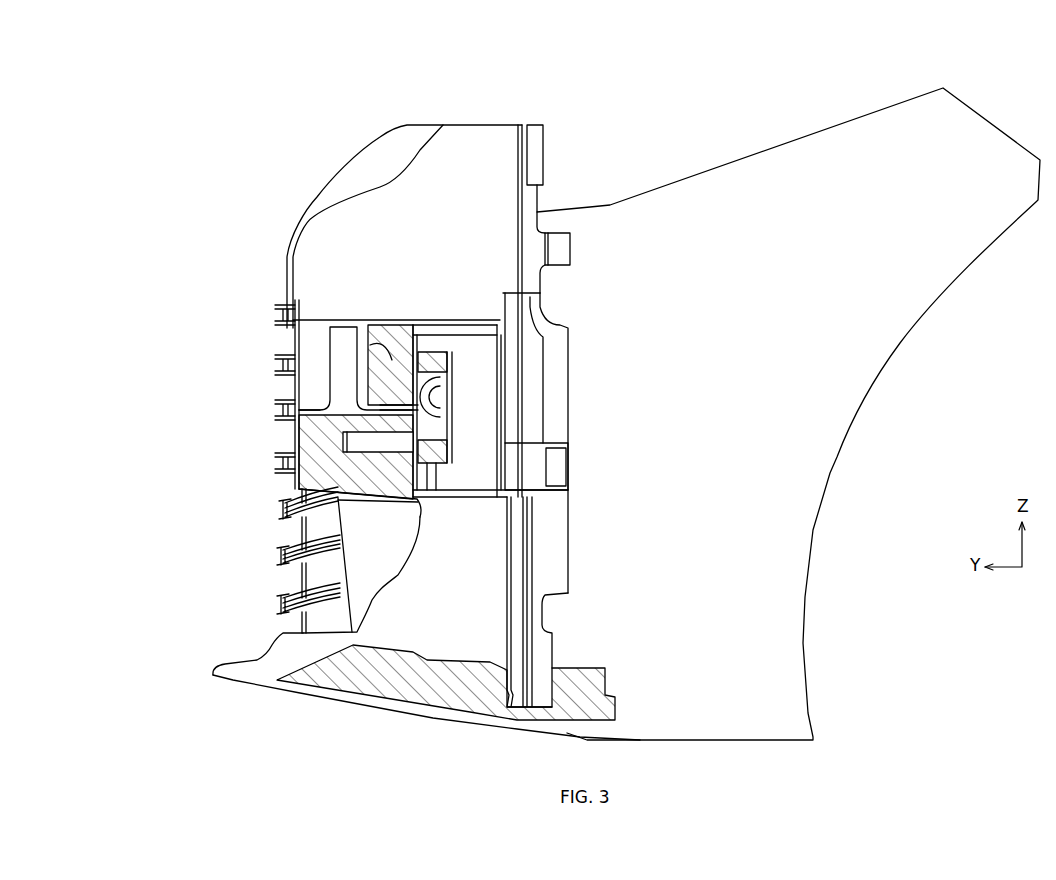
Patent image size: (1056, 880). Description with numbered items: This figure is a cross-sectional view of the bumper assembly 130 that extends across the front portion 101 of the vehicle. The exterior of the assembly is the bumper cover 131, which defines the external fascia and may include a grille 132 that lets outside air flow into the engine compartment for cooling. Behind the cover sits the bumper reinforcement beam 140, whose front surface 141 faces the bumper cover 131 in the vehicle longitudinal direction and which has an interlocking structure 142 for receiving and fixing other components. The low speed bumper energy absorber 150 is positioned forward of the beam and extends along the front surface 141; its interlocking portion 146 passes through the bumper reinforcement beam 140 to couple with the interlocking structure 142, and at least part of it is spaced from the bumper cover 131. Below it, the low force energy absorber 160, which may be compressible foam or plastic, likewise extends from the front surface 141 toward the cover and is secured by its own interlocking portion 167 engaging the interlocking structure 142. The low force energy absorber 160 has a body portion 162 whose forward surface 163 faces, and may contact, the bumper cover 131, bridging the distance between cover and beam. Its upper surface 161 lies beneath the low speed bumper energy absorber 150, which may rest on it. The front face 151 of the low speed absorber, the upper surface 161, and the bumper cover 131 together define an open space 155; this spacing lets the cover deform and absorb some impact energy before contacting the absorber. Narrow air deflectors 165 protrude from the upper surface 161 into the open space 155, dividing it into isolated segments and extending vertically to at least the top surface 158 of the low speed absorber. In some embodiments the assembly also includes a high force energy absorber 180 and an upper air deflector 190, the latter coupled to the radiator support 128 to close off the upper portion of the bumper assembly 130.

The front portion 101 is at (323, 128).
The radiator support 128 is at (542, 205).
The bumper assembly 130 is at (225, 165).
The bumper cover 131 is at (323, 192).
The grille 132 is at (245, 478).
The bumper reinforcement beam 140 is at (505, 418).
The front surface 141 is at (418, 330).
The interlocking structure 142 is at (472, 400).
The interlocking portion 146 is at (425, 360).
The low speed bumper energy absorber 150 is at (378, 318).
The front face 151 is at (375, 355).
The open space 155 is at (330, 322).
The top surface 158 is at (395, 322).
The low force energy absorber 160 is at (300, 452).
The upper surface 161 is at (310, 423).
The body portion 162 is at (297, 482).
The forward surface 163 is at (295, 485).
The air deflectors 165 is at (325, 352).
The interlocking portion 167 is at (435, 492).
The high force energy absorber 180 is at (300, 696).
The upper air deflector 190 is at (507, 125).